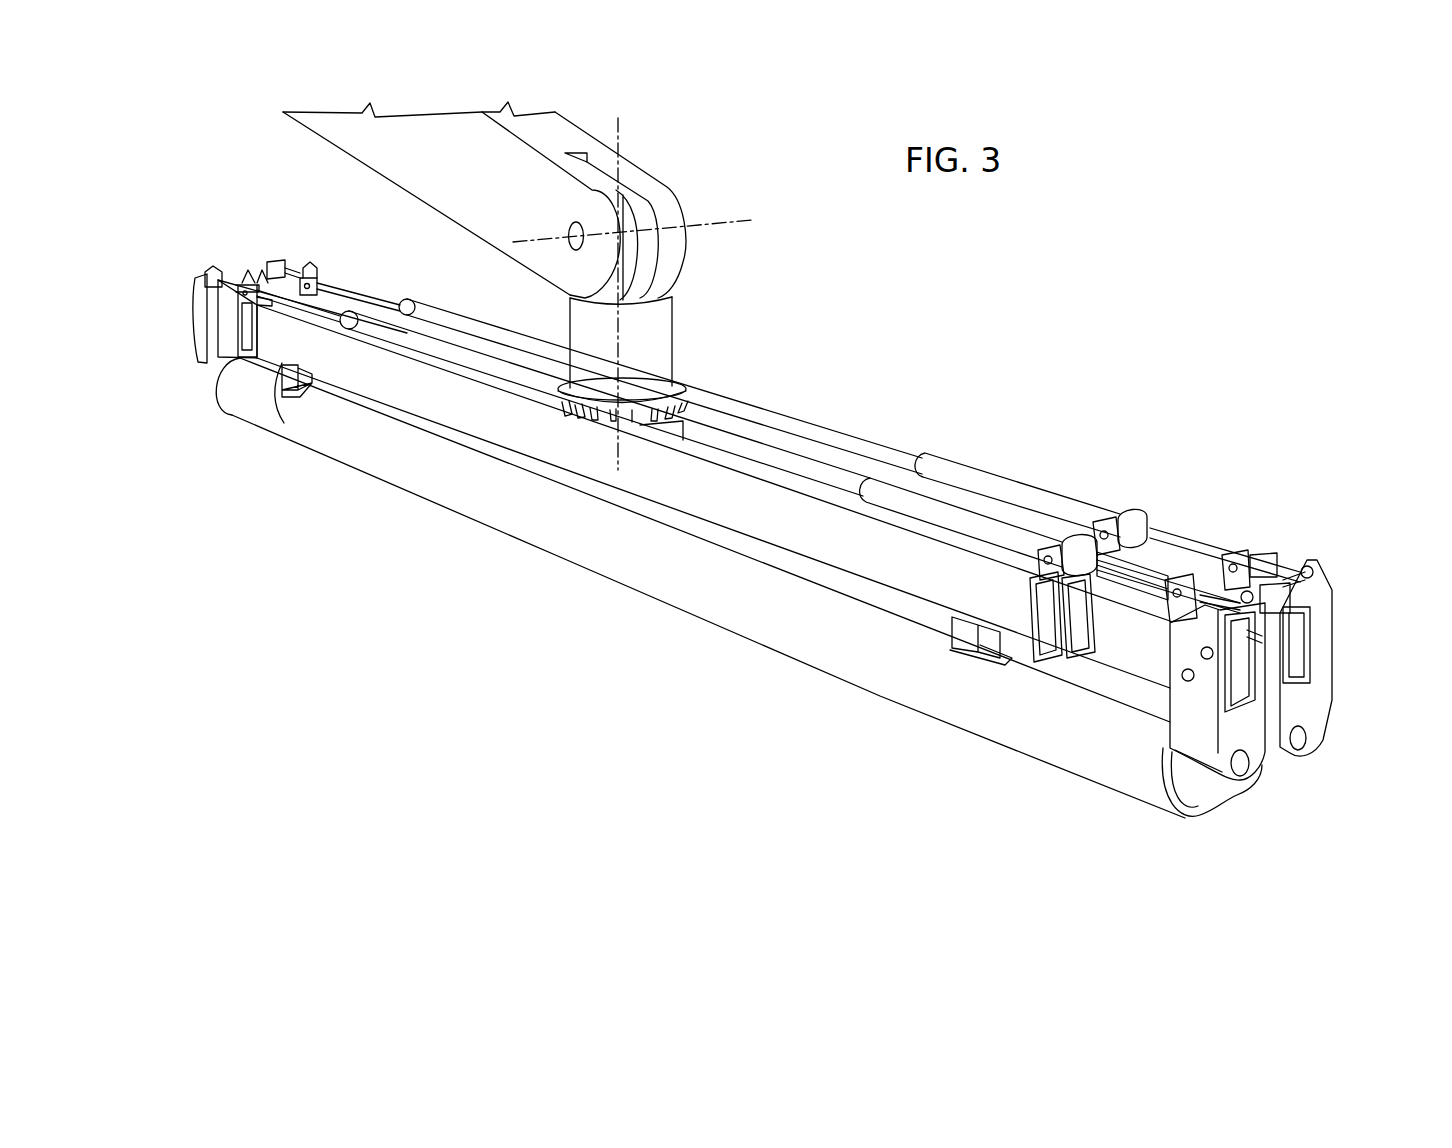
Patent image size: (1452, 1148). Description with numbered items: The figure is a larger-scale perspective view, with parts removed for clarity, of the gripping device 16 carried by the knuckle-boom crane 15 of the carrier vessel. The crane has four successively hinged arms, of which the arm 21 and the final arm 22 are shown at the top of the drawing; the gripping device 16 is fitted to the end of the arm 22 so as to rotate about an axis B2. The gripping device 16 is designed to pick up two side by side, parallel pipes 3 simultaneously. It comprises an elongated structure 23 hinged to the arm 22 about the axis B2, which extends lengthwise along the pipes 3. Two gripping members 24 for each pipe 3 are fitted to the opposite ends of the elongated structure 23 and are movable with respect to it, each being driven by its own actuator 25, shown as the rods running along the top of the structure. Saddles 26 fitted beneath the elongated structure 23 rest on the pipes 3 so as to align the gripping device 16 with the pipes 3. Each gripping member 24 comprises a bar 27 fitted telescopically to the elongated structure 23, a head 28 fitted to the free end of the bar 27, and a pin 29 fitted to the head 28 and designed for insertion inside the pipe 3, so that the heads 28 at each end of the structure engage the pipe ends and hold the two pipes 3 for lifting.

The pipe 3 is at (558, 528).
The knuckle-boom crane 15 is at (660, 166).
The gripping device 16 is at (830, 412).
The arm 21 is at (420, 172).
The arm 22 is at (656, 327).
The elongated structure 23 is at (752, 430).
The gripping member 24 is at (174, 288).
The actuator 25 is at (343, 298).
The saddle 26 is at (281, 388).
The bar 27 is at (230, 325).
The head 28 is at (1320, 676).
The pin 29 is at (1300, 742).
The axis B2 is at (618, 142).